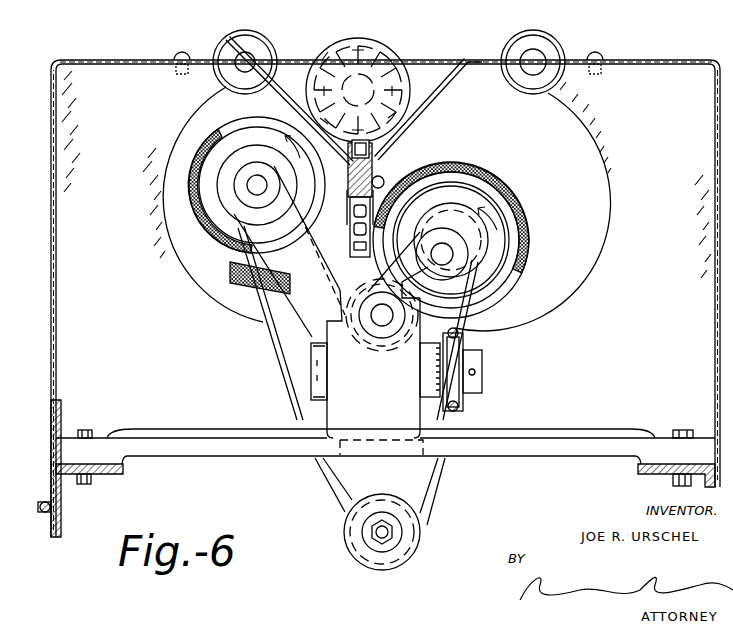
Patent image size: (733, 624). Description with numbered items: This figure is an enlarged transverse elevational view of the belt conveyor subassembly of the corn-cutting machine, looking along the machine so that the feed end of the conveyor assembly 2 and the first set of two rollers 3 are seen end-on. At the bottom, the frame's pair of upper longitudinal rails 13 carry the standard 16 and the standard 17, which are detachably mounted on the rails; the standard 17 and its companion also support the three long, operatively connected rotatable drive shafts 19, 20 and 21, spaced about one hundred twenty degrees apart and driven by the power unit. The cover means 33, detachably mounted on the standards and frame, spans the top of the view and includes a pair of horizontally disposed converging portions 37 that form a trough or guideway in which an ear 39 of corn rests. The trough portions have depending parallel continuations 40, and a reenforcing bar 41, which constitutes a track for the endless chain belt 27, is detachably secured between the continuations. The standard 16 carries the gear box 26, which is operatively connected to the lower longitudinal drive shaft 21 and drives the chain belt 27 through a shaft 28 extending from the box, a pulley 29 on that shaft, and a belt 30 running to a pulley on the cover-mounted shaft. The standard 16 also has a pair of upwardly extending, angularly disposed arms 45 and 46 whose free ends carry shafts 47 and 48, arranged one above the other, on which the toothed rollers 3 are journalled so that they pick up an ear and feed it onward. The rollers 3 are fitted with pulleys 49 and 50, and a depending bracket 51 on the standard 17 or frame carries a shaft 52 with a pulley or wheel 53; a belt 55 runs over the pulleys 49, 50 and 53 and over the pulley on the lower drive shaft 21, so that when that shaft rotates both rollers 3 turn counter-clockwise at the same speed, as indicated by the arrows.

The conveyor assembly 2 is at (427, 127).
The first set of two rollers 3 is at (240, 124).
The upper longitudinal rails 13 is at (63, 488).
The standard 16 is at (375, 372).
The standard 17 is at (386, 211).
The drive shaft 19 is at (538, 56).
The drive shaft 20 is at (244, 40).
The lower longitudinal drive shaft 21 is at (379, 328).
The gear box 26 is at (340, 377).
The endless chain belt 27 is at (370, 152).
The shaft 28 is at (442, 365).
The pulley 29 is at (455, 382).
The belt 30 is at (460, 408).
The cover means 33 is at (109, 60).
The horizontally disposed converging portions 37 is at (281, 96).
The ear 39 is at (362, 40).
The depending parallel continuations 40 is at (348, 163).
The reenforcing bar 41 is at (373, 189).
The arm 45 is at (305, 302).
The arm 46 is at (425, 283).
The shaft 47 is at (247, 189).
The shaft 48 is at (448, 258).
The pulley 49 is at (232, 174).
The pulley 50 is at (480, 250).
The depending bracket 51 is at (358, 473).
The shaft 52 is at (372, 532).
The pulley or wheel 53 is at (347, 550).
The belt 55 is at (282, 365).